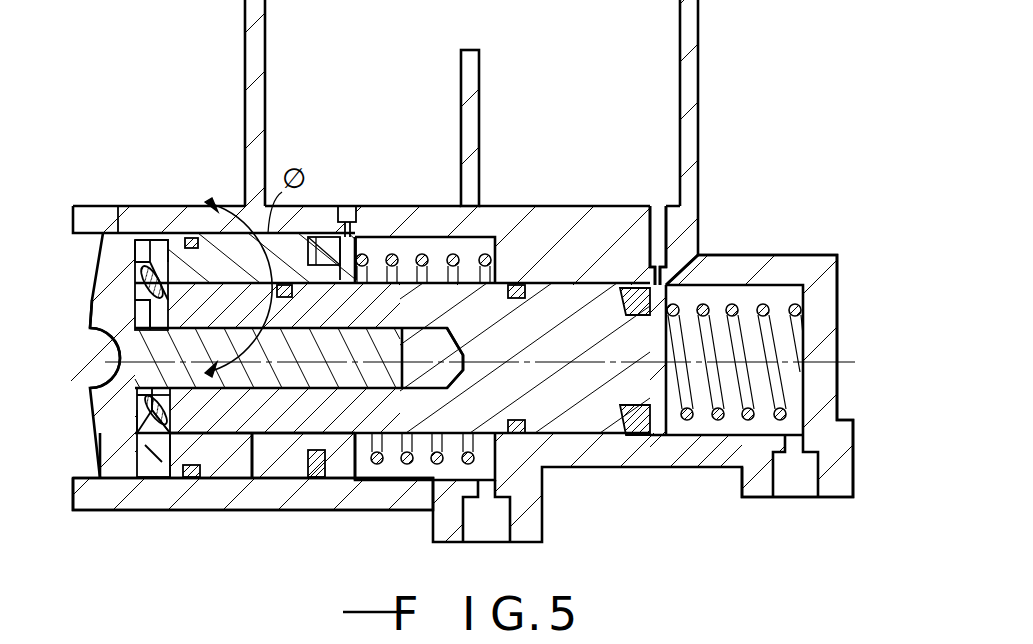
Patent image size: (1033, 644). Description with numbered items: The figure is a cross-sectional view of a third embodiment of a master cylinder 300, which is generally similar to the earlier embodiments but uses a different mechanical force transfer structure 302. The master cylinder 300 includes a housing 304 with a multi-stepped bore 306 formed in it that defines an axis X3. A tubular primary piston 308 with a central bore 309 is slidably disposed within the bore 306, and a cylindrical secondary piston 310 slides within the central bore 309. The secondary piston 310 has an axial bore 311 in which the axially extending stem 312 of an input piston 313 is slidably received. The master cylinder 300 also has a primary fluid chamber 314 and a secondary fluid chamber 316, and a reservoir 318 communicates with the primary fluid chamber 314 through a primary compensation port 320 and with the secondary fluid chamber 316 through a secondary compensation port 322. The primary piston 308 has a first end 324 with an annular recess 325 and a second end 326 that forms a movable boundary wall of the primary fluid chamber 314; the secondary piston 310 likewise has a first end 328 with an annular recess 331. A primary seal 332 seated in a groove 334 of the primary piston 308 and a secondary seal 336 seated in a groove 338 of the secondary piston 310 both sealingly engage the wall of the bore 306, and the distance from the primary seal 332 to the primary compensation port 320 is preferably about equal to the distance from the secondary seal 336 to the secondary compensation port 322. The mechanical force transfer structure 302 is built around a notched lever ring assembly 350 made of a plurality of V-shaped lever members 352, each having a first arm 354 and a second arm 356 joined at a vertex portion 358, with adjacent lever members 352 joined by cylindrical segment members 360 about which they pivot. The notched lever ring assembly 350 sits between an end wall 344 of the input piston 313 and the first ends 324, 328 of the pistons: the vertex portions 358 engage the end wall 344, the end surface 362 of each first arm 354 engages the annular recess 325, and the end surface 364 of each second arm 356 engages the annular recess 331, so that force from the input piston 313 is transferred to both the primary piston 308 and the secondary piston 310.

The master cylinder 300 is at (712, 98).
The mechanical force transfer structure 302 is at (147, 478).
The housing 304 is at (700, 232).
The multi-stepped bore 306 is at (750, 288).
The primary piston 308 is at (322, 237).
The central bore 309 is at (253, 480).
The secondary piston 310 is at (388, 433).
The axial bore 311 is at (444, 333).
The stem 312 is at (395, 373).
The input piston 313 is at (111, 386).
The primary fluid chamber 314 is at (492, 206).
The secondary fluid chamber 316 is at (756, 400).
The reservoir 318 is at (270, 37).
The primary compensation port 320 is at (348, 225).
The secondary compensation port 322 is at (668, 280).
The first end 324 is at (150, 240).
The annular recess 325 is at (118, 206).
The second end 326 is at (358, 483).
The first end 328 is at (140, 312).
The annular recess 331 is at (102, 255).
The primary seal 332 is at (325, 237).
The groove 334 is at (316, 478).
The secondary seal 336 is at (638, 285).
The groove 338 is at (643, 438).
The end wall 344 is at (140, 300).
The notched lever ring assembly 350 is at (148, 462).
The lever member 352 is at (183, 200).
The first arm 354 is at (145, 427).
The second arm 356 is at (148, 460).
The vertex portion 358 is at (145, 440).
The segment member 360 is at (160, 438).
The end surface 362 is at (163, 416).
The end surface 364 is at (178, 478).
The axis X3 is at (853, 362).